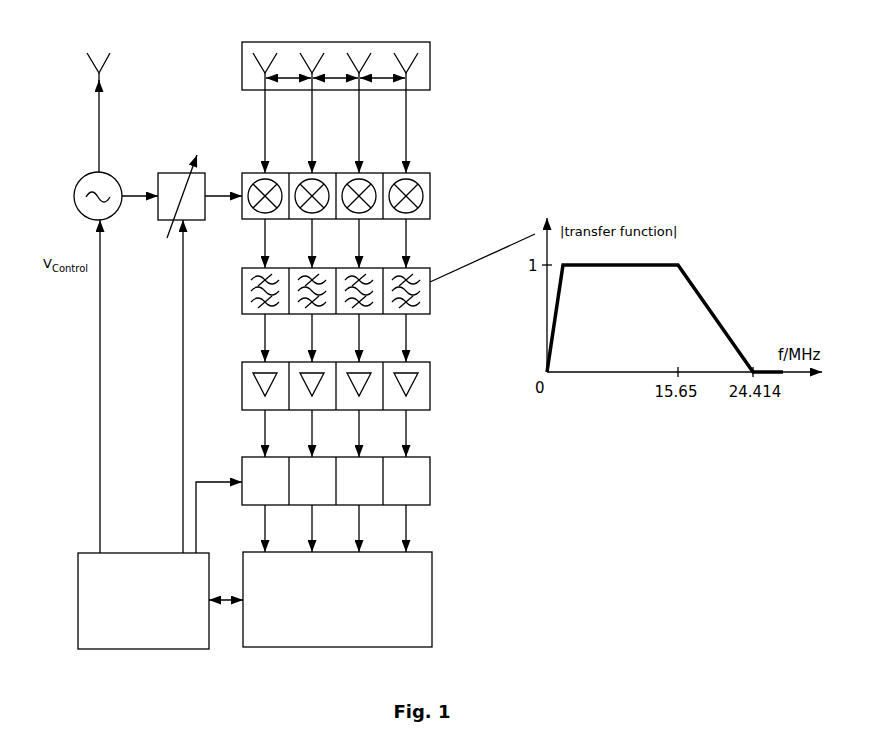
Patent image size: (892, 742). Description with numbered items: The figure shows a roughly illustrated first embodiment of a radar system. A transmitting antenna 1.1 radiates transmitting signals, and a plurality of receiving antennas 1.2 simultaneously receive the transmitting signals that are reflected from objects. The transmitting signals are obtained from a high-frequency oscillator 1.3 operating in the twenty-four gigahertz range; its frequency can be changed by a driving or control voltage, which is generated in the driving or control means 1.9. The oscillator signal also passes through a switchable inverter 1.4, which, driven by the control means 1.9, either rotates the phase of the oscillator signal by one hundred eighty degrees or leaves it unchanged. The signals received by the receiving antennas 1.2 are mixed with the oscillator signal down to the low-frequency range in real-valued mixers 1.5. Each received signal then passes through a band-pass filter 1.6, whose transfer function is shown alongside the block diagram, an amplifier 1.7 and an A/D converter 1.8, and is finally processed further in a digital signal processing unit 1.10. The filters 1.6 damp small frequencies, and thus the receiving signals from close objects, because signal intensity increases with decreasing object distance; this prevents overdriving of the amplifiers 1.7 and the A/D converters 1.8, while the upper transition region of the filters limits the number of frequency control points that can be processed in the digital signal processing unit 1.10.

The transmitting antenna 1.1 is at (93, 68).
The receiving antennas 1.2 is at (430, 65).
The high-frequency oscillator 1.3 is at (82, 178).
The switchable inverter 1.4 is at (170, 172).
The real-valued mixers 1.5 is at (430, 187).
The band-pass filter 1.6 is at (430, 290).
The amplifier 1.7 is at (430, 385).
The A/D converter 1.8 is at (430, 478).
The control means 1.9 is at (78, 602).
The digital signal processing unit 1.10 is at (432, 598).